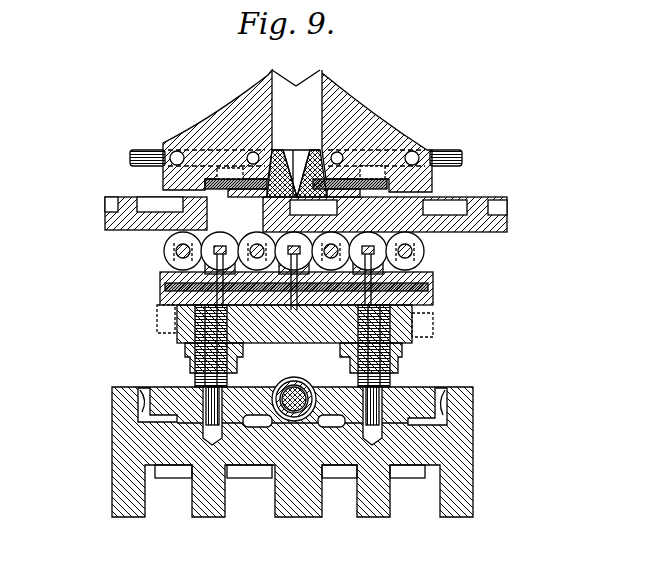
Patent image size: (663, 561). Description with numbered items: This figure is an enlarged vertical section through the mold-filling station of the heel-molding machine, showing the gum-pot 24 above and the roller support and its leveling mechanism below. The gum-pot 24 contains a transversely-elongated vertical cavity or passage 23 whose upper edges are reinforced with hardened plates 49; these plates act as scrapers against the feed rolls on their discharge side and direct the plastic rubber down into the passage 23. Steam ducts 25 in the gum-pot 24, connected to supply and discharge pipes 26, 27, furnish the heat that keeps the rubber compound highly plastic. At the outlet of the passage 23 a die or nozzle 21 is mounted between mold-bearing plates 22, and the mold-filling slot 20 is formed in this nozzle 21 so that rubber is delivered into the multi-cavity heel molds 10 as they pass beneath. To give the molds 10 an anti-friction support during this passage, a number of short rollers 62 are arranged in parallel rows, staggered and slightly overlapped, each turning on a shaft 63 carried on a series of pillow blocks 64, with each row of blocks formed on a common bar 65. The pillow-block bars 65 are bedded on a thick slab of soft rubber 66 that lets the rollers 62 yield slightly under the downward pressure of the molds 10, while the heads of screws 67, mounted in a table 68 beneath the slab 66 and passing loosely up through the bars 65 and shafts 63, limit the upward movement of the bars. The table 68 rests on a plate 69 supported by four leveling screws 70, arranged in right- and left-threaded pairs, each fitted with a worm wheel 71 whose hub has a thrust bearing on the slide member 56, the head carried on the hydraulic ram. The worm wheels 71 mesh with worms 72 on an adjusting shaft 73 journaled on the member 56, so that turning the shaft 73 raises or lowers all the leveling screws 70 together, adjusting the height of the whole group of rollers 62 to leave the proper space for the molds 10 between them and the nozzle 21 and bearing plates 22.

The multi-cavity heel mold 10 is at (105, 220).
The mold-filling slot 20 is at (296, 203).
The die or nozzle 21 is at (263, 200).
The mold-bearing plate 22 is at (243, 197).
The vertical cavity or passage 23 is at (350, 103).
The gum-pot 24 is at (240, 120).
The steam duct 25 is at (177, 151).
The supply pipe 26 is at (140, 158).
The discharge pipe 27 is at (445, 153).
The hardened plate 49 is at (268, 78).
The slide member 56 is at (450, 450).
The roller 62 is at (168, 240).
The roller shaft 63 is at (412, 255).
The pillow block 64 is at (433, 288).
The pillow-block bar 65 is at (296, 300).
The soft rubber slab 66 is at (168, 287).
The screw 67 is at (168, 258).
The table 68 is at (425, 303).
The plate 69 is at (186, 345).
The leveling screw 70 is at (185, 358).
The worm wheel 71 is at (162, 397).
The worm 72 is at (284, 410).
The adjusting shaft 73 is at (294, 414).